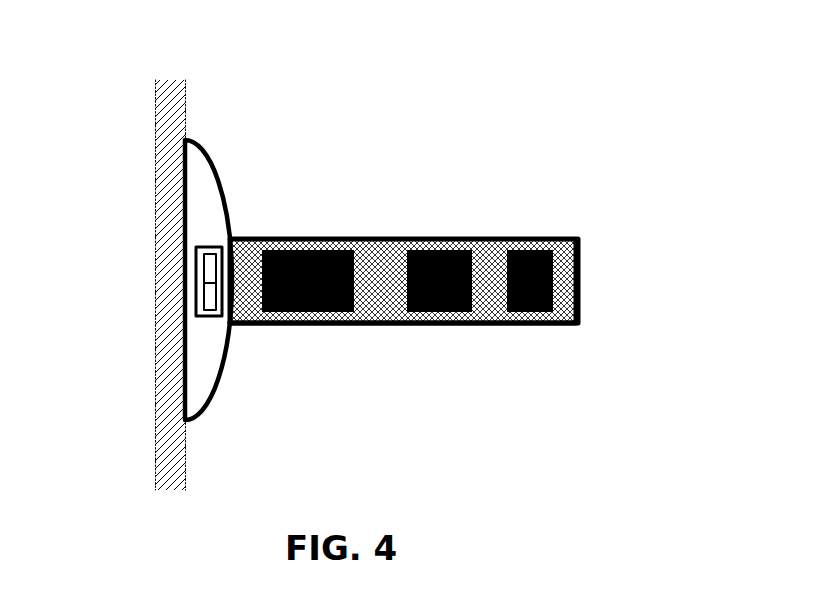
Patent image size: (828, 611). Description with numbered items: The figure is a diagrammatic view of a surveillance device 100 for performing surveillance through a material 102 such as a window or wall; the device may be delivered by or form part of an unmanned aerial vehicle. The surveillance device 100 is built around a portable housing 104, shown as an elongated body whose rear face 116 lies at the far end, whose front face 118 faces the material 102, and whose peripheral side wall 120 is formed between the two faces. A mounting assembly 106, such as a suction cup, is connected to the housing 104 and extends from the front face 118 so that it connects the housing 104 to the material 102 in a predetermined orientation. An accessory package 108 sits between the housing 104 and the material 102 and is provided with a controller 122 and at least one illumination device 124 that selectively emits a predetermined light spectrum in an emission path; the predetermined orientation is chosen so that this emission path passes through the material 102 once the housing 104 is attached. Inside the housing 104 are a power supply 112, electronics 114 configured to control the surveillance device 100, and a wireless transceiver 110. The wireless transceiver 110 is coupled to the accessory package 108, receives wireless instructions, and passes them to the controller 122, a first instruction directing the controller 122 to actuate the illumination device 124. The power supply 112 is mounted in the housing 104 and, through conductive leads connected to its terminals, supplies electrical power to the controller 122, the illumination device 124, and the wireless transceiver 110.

The surveillance device 100 is at (338, 237).
The material 102 is at (172, 80).
The portable housing 104 is at (465, 237).
The mounting assembly 106 is at (216, 168).
The accessory package 108 is at (222, 240).
The wireless transceiver 110 is at (530, 315).
The power supply 112 is at (345, 318).
The electronics 114 is at (440, 315).
The rear face 116 is at (578, 278).
The front face 118 is at (245, 306).
The peripheral side wall 120 is at (535, 237).
The controller 122 is at (205, 263).
The illumination device 124 is at (205, 297).